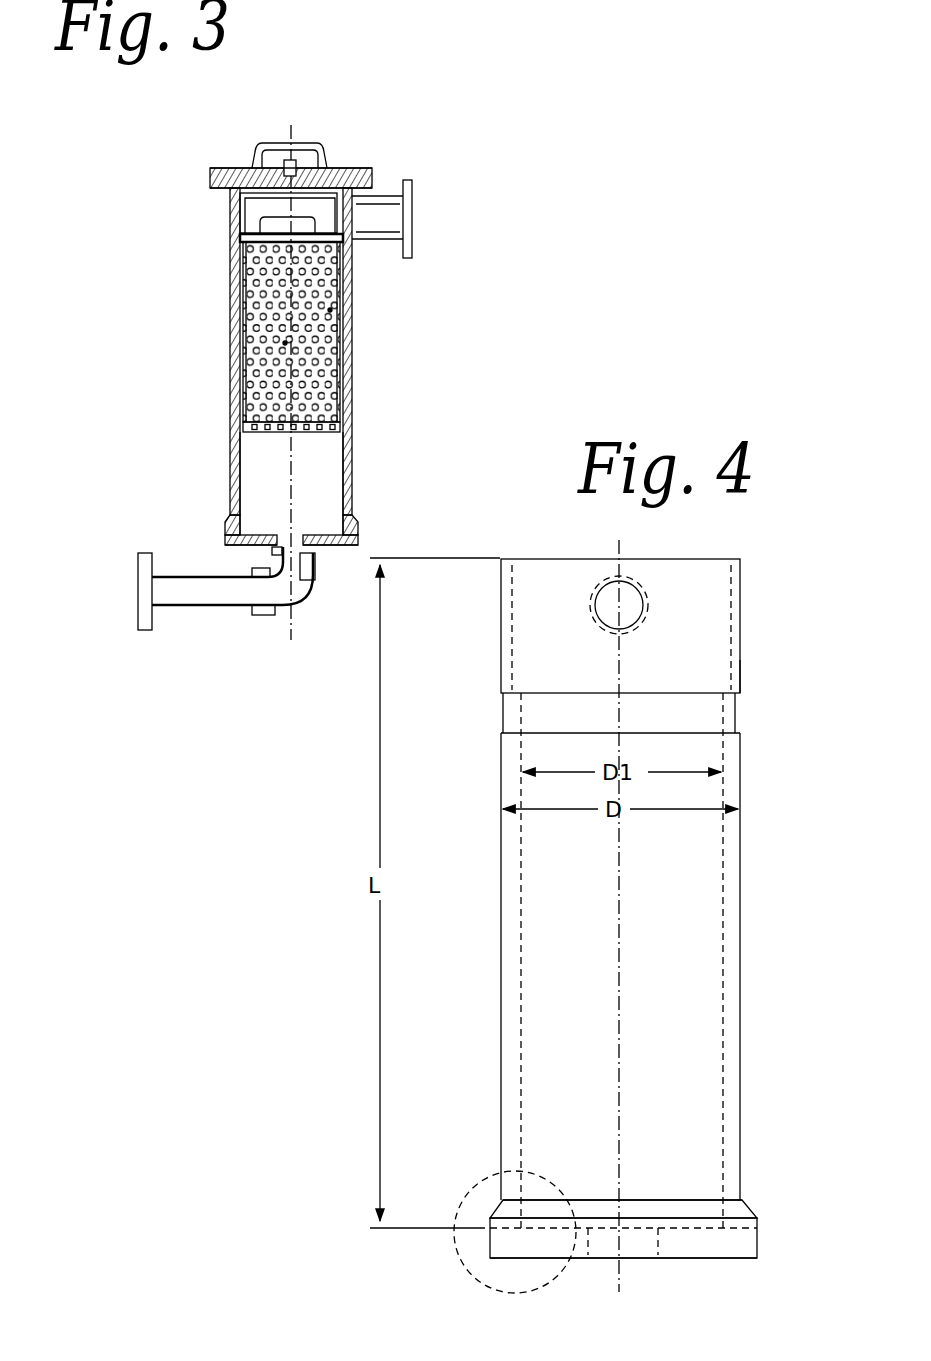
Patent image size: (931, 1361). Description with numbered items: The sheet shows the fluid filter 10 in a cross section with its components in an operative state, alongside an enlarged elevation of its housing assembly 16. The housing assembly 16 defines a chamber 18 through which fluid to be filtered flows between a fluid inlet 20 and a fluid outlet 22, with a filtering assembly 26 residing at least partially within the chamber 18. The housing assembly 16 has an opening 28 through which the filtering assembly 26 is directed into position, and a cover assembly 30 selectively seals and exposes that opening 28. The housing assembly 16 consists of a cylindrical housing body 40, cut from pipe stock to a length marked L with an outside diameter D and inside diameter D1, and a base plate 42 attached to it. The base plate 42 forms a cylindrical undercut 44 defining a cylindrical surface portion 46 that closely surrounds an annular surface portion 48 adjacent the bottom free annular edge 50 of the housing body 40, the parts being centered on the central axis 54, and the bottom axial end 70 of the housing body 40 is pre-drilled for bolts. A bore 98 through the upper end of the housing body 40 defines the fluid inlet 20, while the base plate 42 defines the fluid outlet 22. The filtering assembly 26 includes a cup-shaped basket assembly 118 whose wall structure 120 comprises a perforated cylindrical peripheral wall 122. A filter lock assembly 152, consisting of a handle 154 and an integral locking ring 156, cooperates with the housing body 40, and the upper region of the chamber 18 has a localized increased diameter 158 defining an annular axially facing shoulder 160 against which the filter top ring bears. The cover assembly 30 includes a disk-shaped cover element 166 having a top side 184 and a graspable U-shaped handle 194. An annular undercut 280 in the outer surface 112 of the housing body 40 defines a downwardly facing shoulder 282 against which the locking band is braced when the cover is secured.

In FIG. 3, the fluid filter 10 is at (408, 142).
In FIG. 3, the housing assembly 16 is at (353, 458).
In FIG. 4, the housing assembly 16 is at (740, 852).
In FIG. 3, the chamber 18 is at (345, 388).
In FIG. 3, the fluid inlet 20 is at (358, 237).
In FIG. 4, the fluid inlet 20 is at (598, 618).
In FIG. 3, the fluid outlet 22 is at (288, 545).
In FIG. 3, the filtering assembly 26 is at (285, 343).
In FIG. 3, the opening 28 is at (237, 212).
In FIG. 3, the cover assembly 30 is at (344, 166).
In FIG. 3, the housing body 40 is at (353, 340).
In FIG. 4, the housing body 40 is at (742, 815).
In FIG. 3, the base plate 42 is at (360, 540).
In FIG. 4, the base plate 42 is at (742, 1238).
In FIG. 4, the cylindrical undercut 44 is at (555, 1263).
In FIG. 4, the cylindrical surface portion 46 is at (560, 1248).
In FIG. 4, the annular surface portion 48 is at (515, 1228).
In FIG. 4, the bottom free annular edge 50 is at (560, 1258).
In FIG. 3, the central axis 54 is at (291, 452).
In FIG. 4, the central axis 54 is at (621, 940).
In FIG. 3, the bottom axial end 70 is at (360, 507).
In FIG. 4, the bottom axial end 70 is at (742, 1196).
In FIG. 4, the bore 98 is at (594, 609).
In FIG. 3, the outer surface 112 is at (345, 426).
In FIG. 4, the outer surface 112 is at (742, 890).
In FIG. 3, the basket assembly 118 is at (240, 282).
In FIG. 3, the wall structure 120 is at (331, 310).
In FIG. 3, the cylindrical peripheral wall 122 is at (240, 318).
In FIG. 3, the filter lock assembly 152 is at (320, 210).
In FIG. 3, the handle 154 is at (330, 200).
In FIG. 3, the locking ring 156 is at (237, 240).
In FIG. 4, the localized increased diameter 158 is at (516, 647).
In FIG. 4, the annular axially facing shoulder 160 is at (727, 680).
In FIG. 3, the cover element 166 is at (220, 166).
In FIG. 3, the top side 184 is at (363, 170).
In FIG. 3, the U-shaped handle 194 is at (298, 142).
In FIG. 4, the annular undercut 280 is at (737, 695).
In FIG. 4, the annular downwardly facing shoulder 282 is at (507, 697).